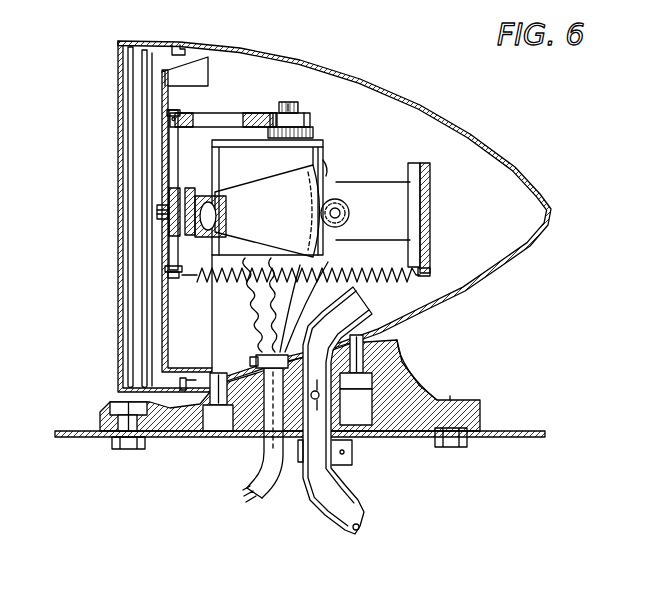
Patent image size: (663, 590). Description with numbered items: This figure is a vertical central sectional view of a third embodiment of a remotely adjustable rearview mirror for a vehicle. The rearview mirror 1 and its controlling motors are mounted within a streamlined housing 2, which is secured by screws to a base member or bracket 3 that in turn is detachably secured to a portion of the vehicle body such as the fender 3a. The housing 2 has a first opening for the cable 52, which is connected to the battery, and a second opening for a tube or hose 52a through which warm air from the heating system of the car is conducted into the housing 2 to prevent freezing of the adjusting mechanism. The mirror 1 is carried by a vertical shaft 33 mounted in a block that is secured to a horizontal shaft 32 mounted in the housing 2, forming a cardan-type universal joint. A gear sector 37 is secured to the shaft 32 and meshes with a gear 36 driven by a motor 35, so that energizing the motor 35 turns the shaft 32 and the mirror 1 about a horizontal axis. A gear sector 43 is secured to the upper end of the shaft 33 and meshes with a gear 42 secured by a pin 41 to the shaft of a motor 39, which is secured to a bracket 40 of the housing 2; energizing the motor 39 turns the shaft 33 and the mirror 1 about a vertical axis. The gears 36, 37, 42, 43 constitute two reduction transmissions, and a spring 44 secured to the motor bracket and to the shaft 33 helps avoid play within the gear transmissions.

The rearview mirror 1 is at (120, 96).
The streamlined housing 2 is at (506, 164).
The base member or bracket 3 is at (392, 378).
The fender 3a is at (545, 430).
The horizontal shaft 32 is at (427, 230).
The vertical shaft 33 is at (176, 156).
The motor 35 is at (390, 200).
The gear 36 is at (340, 206).
The gear sector 37 is at (298, 190).
The motor 39 is at (314, 147).
The bracket 40 is at (217, 158).
The pin 41 is at (288, 101).
The gear 42 is at (305, 110).
The gear sector 43 is at (197, 117).
The spring 44 is at (398, 278).
The cable 52 is at (266, 458).
The tube or hose 52a is at (330, 472).